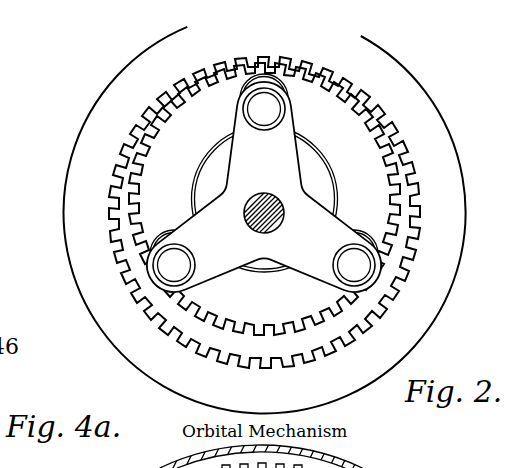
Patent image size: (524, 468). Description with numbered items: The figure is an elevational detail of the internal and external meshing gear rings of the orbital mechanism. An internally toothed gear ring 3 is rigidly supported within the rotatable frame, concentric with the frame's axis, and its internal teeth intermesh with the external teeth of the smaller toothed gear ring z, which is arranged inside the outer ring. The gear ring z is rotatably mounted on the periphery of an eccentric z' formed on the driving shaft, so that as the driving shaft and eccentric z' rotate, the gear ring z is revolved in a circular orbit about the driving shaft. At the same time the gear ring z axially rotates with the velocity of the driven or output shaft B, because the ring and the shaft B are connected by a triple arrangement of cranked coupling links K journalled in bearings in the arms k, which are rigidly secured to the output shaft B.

The internally toothed gear ring 3 is at (265, 220).
The toothed gear ring z is at (264, 212).
The eccentric z' is at (265, 199).
The arms k is at (288, 152).
The cranked coupling links K is at (278, 110).
The driven or output shaft B is at (279, 229).